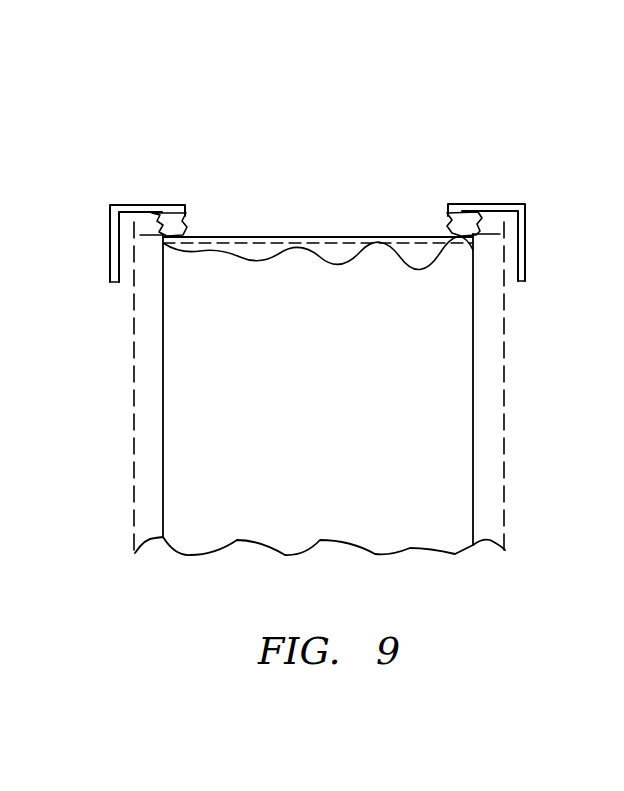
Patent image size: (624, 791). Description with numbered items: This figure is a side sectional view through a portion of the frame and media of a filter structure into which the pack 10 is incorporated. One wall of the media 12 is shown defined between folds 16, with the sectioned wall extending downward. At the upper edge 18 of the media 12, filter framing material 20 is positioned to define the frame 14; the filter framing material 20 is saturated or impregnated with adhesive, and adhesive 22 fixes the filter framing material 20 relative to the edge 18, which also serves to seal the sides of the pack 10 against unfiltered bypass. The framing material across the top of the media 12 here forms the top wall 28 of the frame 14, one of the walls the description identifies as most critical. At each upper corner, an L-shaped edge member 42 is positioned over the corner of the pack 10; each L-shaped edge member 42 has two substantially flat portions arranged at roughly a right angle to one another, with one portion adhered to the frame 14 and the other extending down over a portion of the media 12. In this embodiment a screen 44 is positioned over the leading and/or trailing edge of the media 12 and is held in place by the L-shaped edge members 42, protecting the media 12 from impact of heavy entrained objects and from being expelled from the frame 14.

The pack 10 is at (456, 114).
The media 12 is at (485, 425).
The frame 14 is at (255, 224).
The folds 16 is at (473, 304).
The upper edge 18 is at (314, 250).
The filter framing material 20 is at (318, 205).
The top wall 28 is at (392, 237).
The adhesive 22 is at (170, 219).
The L-shaped edge members 42 is at (125, 207).
The screen 44 is at (133, 372).